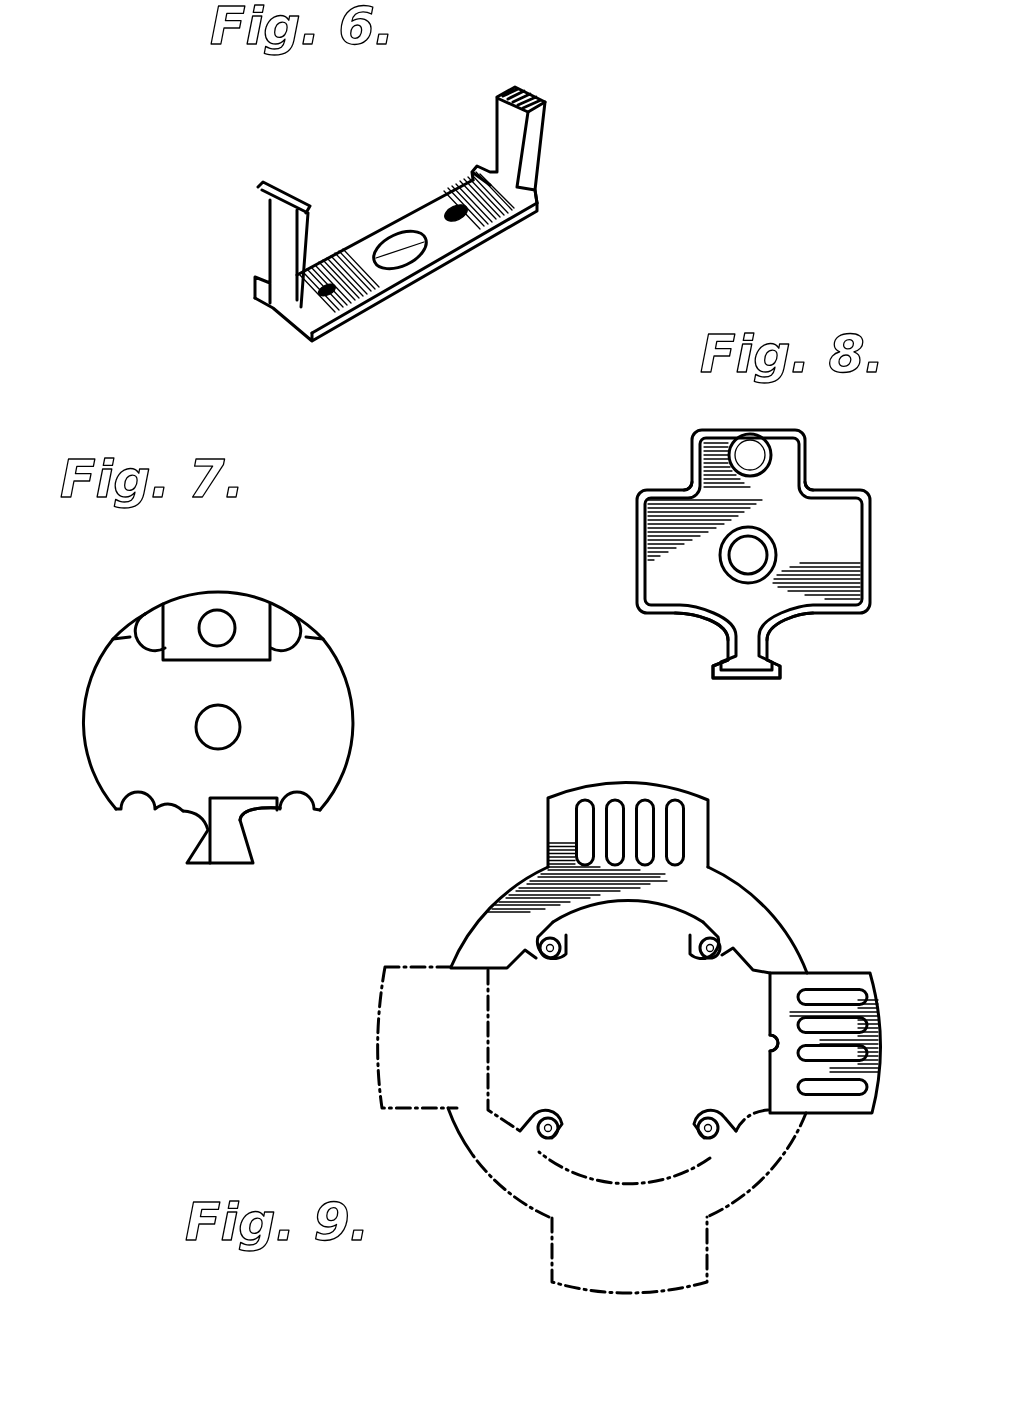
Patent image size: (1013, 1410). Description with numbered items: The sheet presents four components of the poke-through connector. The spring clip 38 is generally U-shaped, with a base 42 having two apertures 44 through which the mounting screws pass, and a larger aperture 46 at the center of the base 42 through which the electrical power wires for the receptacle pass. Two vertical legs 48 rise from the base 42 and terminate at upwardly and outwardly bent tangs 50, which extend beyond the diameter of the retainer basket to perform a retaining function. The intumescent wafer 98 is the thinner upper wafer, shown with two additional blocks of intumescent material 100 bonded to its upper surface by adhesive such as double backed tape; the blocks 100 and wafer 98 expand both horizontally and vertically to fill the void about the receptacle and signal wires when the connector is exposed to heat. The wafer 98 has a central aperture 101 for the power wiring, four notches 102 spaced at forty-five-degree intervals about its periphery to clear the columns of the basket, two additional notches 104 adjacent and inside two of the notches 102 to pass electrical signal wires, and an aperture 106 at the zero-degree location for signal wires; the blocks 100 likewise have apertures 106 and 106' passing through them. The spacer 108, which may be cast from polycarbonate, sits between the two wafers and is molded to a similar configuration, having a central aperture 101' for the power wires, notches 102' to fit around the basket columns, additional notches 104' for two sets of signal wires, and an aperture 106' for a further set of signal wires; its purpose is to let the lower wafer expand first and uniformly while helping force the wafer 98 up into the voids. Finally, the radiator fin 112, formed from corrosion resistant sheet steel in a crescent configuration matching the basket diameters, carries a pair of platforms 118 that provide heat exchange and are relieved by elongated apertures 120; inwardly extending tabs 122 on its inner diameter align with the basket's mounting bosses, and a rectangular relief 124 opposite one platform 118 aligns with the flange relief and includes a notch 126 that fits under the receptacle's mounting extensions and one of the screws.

In FIG. 6, the spring clip 38 is at (517, 223).
In FIG. 6, the base 42 is at (395, 297).
In FIG. 6, the apertures 44 is at (458, 220).
In FIG. 6, the aperture 46 is at (398, 236).
In FIG. 6, the vertical legs 48 is at (282, 240).
In FIG. 6, the tangs 50 is at (266, 182).
In FIG. 7, the intumescent wafer 98 is at (105, 705).
In FIG. 7, the blocks of intumescent material 100 is at (249, 600).
In FIG. 7, the central aperture 101 is at (308, 702).
In FIG. 7, the notches 102 is at (232, 708).
In FIG. 7, the additional notches 104 is at (203, 878).
In FIG. 7, the aperture 106 is at (200, 581).
In FIG. 7, the aperture 106' is at (307, 833).
In FIG. 8, the aperture 106' is at (764, 421).
In FIG. 8, the central aperture 101' is at (658, 555).
In FIG. 8, the notches 102' is at (719, 533).
In FIG. 8, the additional notches 104' is at (730, 687).
In FIG. 8, the spacer 108 is at (640, 500).
In FIG. 9, the radiator fin 112 is at (522, 913).
In FIG. 9, the platforms 118 is at (632, 795).
In FIG. 9, the elongated apertures 120 is at (677, 837).
In FIG. 9, the tabs 122 is at (693, 955).
In FIG. 9, the relief 124 is at (723, 1140).
In FIG. 9, the notch 126 is at (767, 1045).